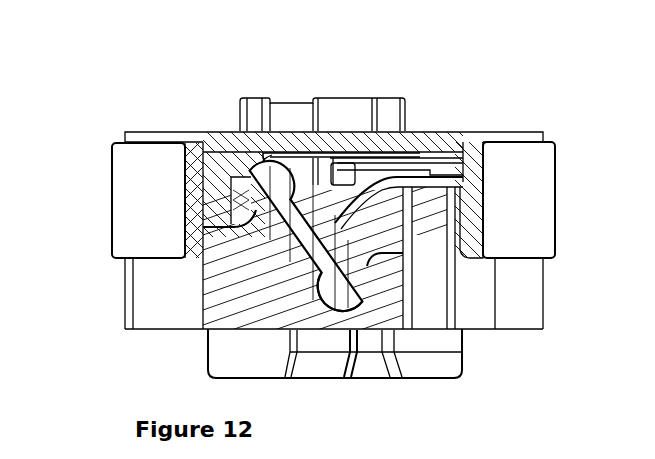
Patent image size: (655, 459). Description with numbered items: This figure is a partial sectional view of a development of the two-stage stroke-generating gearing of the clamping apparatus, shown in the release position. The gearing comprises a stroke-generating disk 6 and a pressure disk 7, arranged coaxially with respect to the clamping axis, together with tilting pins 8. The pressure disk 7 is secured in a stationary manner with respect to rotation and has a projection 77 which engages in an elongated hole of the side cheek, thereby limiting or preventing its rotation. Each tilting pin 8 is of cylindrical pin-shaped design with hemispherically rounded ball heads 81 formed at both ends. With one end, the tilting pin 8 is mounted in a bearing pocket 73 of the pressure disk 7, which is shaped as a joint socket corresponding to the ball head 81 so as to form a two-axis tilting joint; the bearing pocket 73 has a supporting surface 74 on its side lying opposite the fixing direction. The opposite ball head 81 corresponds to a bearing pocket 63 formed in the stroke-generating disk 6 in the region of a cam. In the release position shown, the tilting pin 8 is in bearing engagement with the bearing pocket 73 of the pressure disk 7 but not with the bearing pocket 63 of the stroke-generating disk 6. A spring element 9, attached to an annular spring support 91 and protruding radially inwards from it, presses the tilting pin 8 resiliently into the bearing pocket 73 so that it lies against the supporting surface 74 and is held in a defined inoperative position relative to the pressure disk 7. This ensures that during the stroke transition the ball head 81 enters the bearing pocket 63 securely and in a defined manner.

The stroke-generating disk 6 is at (484, 137).
The pressure disk 7 is at (509, 289).
The tilting pin 8 is at (200, 213).
The spring element 9 is at (352, 186).
The bearing pocket 63 is at (256, 170).
The bearing pocket 73 is at (344, 302).
The supporting surface 74 is at (207, 272).
The projection 77 is at (240, 353).
The ball head 81 is at (280, 190).
The spring support 91 is at (526, 204).